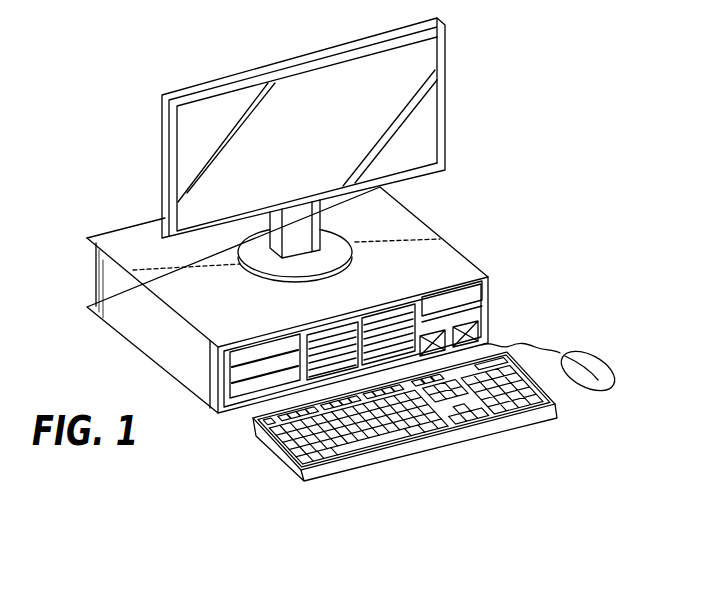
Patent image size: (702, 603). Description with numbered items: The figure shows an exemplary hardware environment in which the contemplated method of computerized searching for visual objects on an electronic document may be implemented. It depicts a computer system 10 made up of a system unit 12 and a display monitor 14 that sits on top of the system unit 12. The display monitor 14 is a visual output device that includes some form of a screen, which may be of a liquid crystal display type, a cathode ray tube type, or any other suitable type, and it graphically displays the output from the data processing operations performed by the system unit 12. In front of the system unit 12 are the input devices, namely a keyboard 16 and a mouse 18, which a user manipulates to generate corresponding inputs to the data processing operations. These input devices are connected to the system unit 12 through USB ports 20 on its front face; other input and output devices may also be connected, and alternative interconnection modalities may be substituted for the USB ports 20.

The computer system 10 is at (78, 128).
The system unit 12 is at (319, 300).
The display monitor 14 is at (322, 143).
The keyboard 16 is at (507, 425).
The mouse 18 is at (612, 365).
The USB ports 20 is at (450, 340).